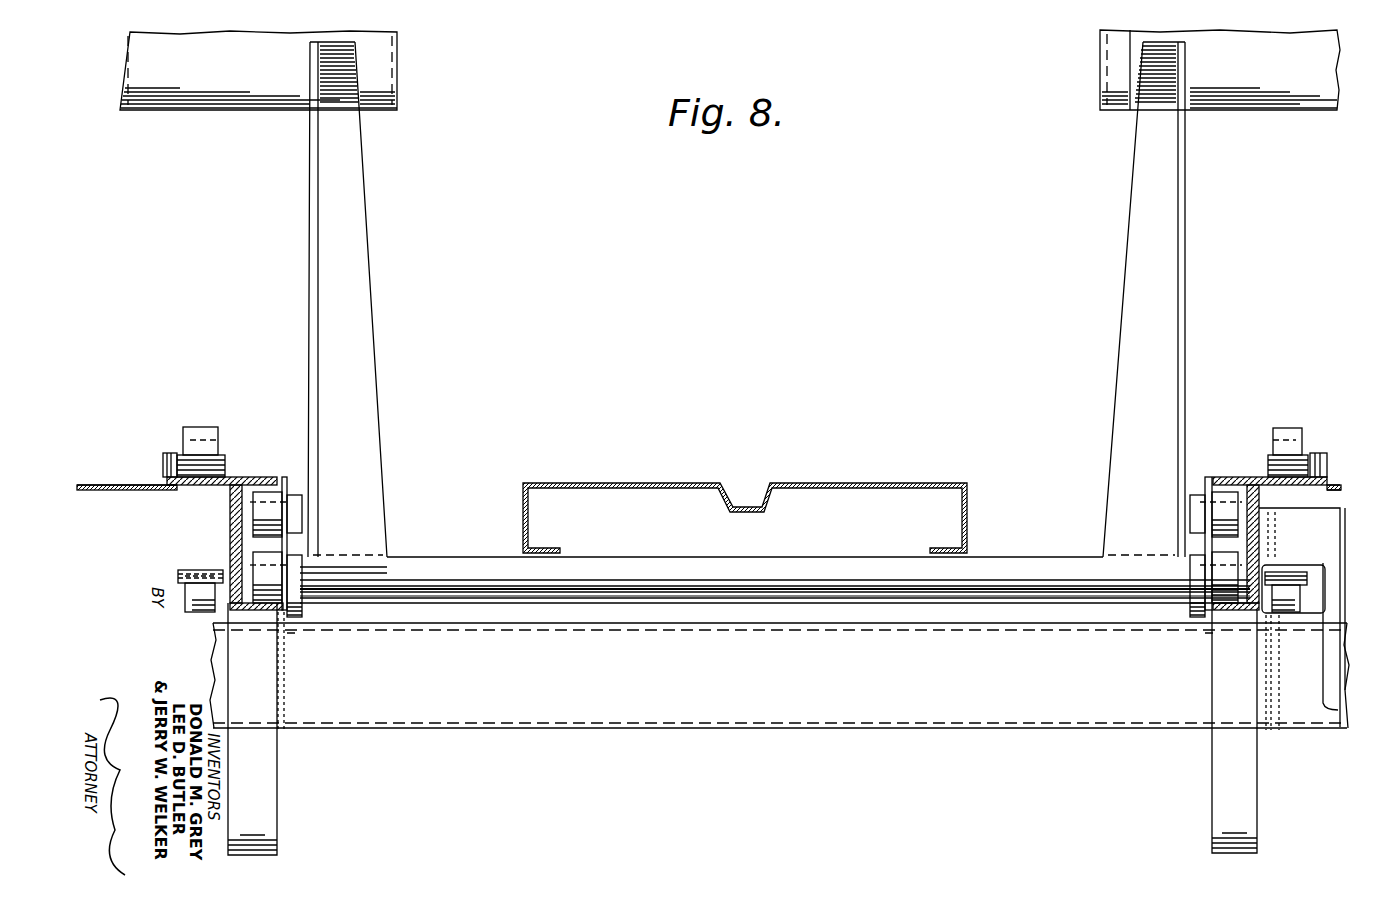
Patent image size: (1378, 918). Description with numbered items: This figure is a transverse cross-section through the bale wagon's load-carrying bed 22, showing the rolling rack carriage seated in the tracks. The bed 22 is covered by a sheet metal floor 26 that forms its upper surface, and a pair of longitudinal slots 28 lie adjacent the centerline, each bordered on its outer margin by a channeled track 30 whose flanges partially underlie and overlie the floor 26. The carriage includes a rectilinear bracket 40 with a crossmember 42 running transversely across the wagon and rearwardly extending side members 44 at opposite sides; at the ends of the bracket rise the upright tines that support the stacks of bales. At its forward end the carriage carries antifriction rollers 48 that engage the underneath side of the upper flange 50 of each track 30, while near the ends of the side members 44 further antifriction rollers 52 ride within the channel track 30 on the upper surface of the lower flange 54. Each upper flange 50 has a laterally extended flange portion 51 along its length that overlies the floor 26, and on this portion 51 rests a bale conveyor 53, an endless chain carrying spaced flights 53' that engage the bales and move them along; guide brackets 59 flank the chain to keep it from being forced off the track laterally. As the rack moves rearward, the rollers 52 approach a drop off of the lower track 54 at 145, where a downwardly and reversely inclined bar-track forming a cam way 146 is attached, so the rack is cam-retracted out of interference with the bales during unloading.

The bed 22 is at (875, 481).
The sheet metal floor 26 is at (118, 484).
The longitudinal slot 28 is at (418, 488).
The channeled track 30 is at (232, 540).
The bracket 40 is at (436, 554).
The crossmember 42 is at (477, 562).
The side member 44 is at (287, 483).
The roller 48 is at (262, 506).
The upper flange 50 is at (265, 478).
The laterally extended flange portion 51 is at (176, 490).
The antifriction roller 52 is at (246, 612).
The bale conveyor 53 is at (734, 514).
The flight 53' is at (761, 522).
The lower flange 54 is at (287, 635).
The guide bracket 59 is at (168, 455).
The drop off 145 is at (243, 613).
The cam way 146 is at (265, 770).